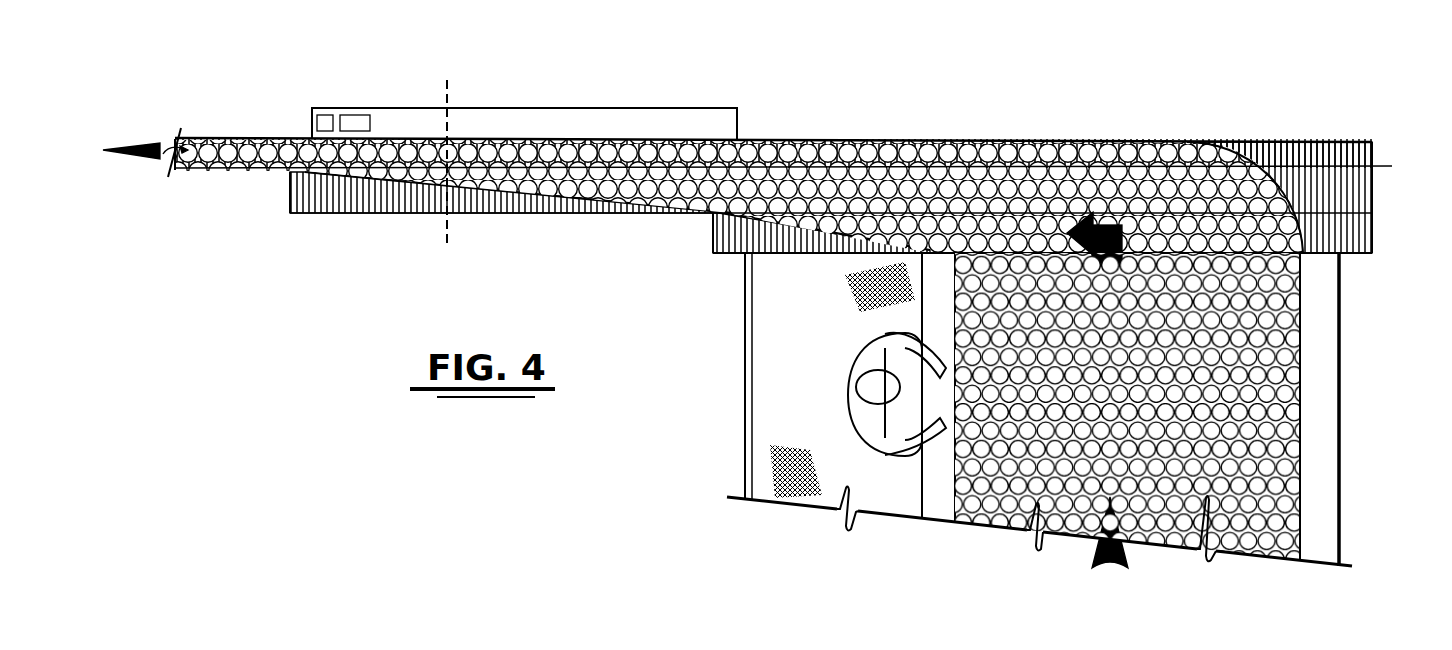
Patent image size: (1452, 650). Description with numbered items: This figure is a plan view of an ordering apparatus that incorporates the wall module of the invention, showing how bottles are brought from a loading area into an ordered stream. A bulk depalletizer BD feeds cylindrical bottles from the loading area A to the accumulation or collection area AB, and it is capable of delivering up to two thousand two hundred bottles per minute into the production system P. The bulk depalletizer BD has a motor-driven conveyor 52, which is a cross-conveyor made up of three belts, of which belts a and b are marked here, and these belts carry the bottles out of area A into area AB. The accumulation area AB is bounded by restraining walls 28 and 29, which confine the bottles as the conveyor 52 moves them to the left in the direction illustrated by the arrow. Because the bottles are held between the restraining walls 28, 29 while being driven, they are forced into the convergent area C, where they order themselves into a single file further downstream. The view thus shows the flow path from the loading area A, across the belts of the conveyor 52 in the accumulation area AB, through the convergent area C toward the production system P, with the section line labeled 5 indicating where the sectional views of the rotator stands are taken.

The section line 5- 5 is at (524, 165).
The restraining wall 28 is at (1247, 157).
The restraining wall 29 is at (950, 494).
The motor-driven conveyor 52 is at (1378, 143).
The production system P is at (130, 152).
The accumulation or collection area AB is at (1187, 136).
The bulk depalletizer BD is at (1313, 142).
The first cross-conveyor belt a is at (1345, 142).
The second cross-conveyor belt b is at (1392, 163).
The convergent area C is at (1352, 257).
The loading area A is at (1350, 566).